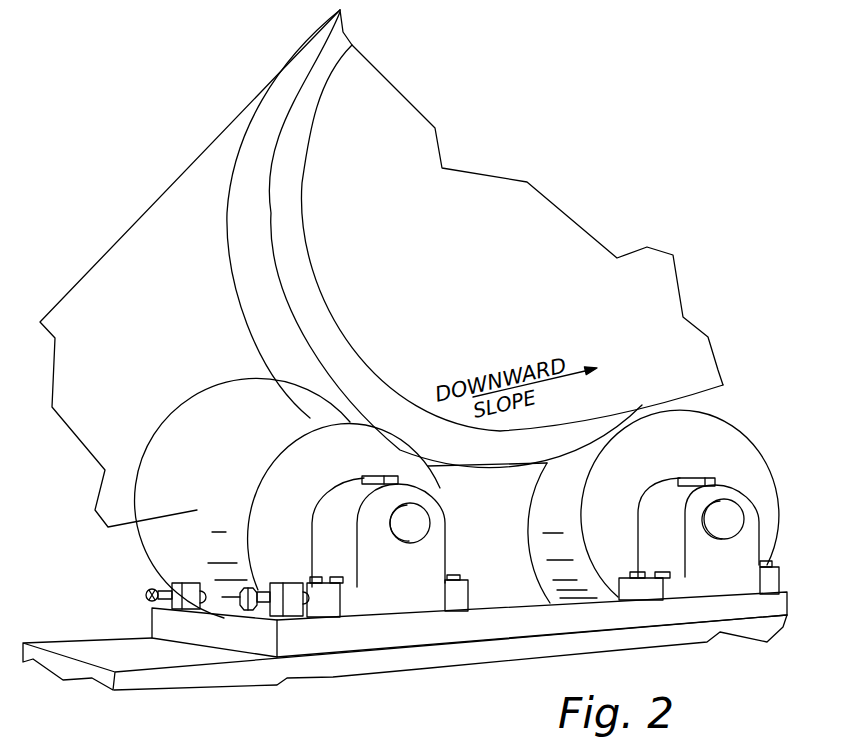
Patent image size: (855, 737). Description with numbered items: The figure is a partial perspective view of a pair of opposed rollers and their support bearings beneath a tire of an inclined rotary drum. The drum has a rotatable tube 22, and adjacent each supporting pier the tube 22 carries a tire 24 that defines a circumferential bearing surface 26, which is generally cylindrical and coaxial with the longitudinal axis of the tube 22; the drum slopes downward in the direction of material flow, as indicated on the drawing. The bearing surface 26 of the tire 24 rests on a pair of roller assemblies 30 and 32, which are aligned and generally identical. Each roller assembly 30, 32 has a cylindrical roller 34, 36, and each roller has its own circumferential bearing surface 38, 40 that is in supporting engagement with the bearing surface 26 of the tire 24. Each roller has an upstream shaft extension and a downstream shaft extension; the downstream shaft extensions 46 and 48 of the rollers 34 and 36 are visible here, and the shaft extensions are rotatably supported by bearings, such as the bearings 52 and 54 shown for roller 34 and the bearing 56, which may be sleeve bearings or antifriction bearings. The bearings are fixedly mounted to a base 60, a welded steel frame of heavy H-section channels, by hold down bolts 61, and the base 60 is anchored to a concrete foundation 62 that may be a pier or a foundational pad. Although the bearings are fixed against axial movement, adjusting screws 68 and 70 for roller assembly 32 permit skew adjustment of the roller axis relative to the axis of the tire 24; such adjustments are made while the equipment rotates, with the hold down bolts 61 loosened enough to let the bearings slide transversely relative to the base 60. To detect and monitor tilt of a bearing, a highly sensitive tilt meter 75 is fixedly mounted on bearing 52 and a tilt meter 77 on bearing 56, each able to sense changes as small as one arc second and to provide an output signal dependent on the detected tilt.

The rotatable tube 22 is at (105, 438).
The tire 24 is at (298, 270).
The circumferential bearing surface 26 is at (288, 333).
The roller assembly 30 is at (676, 498).
The roller assembly 32 is at (325, 498).
The cylindrical roller 34 is at (720, 420).
The cylindrical roller 36 is at (403, 463).
The circumferential bearing surface 38 is at (574, 494).
The circumferential bearing surface 40 is at (239, 497).
The downstream shaft extension 46 is at (728, 520).
The downstream shaft extension 48 is at (410, 522).
The bearing 52 is at (718, 521).
The bearing 54 is at (200, 578).
The bearing 56 is at (402, 525).
The base 60 is at (469, 649).
The hold down bolts 61 is at (337, 577).
The foundation 62 is at (428, 655).
The adjusting screw 68 is at (146, 597).
The adjusting screw 70 is at (264, 622).
The tilt meter 75 is at (688, 478).
The tilt meter 77 is at (373, 476).